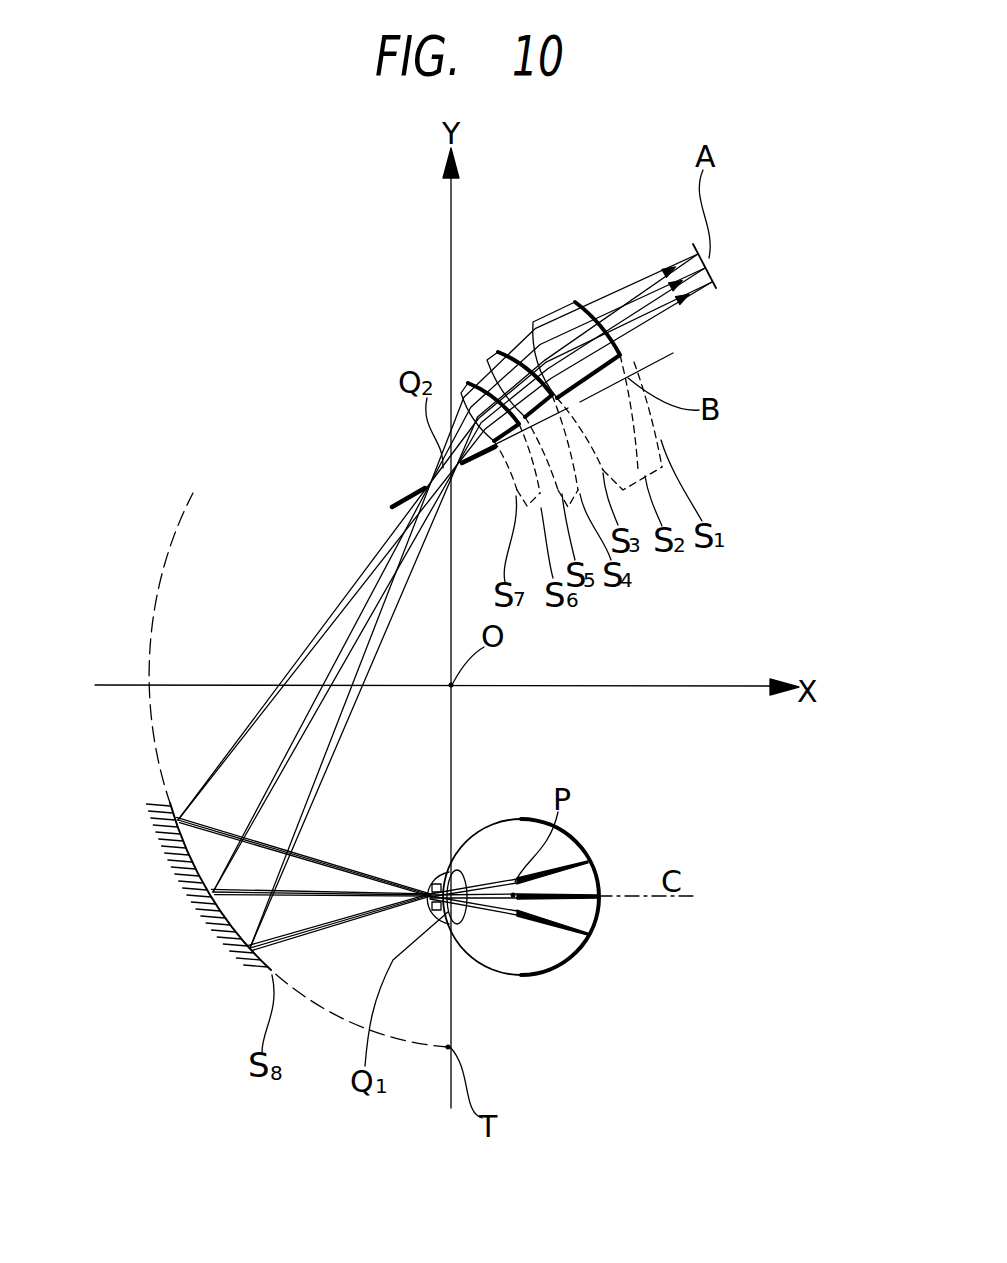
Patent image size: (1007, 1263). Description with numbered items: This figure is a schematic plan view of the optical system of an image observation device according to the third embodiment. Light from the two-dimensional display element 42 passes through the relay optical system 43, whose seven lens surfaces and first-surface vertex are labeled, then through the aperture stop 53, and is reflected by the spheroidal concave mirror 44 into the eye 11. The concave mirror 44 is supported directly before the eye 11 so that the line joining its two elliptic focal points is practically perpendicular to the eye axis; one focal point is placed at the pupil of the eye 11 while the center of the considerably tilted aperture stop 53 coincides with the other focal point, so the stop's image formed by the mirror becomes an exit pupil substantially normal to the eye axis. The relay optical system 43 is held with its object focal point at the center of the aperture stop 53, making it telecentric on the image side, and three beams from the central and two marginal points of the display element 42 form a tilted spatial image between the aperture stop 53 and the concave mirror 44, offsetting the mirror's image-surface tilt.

The eye 11 is at (552, 975).
The two-dimensional display element 42 is at (712, 277).
The relay optical system 43 is at (582, 295).
The concave mirror 44 is at (180, 790).
The aperture stop 53 is at (488, 463).